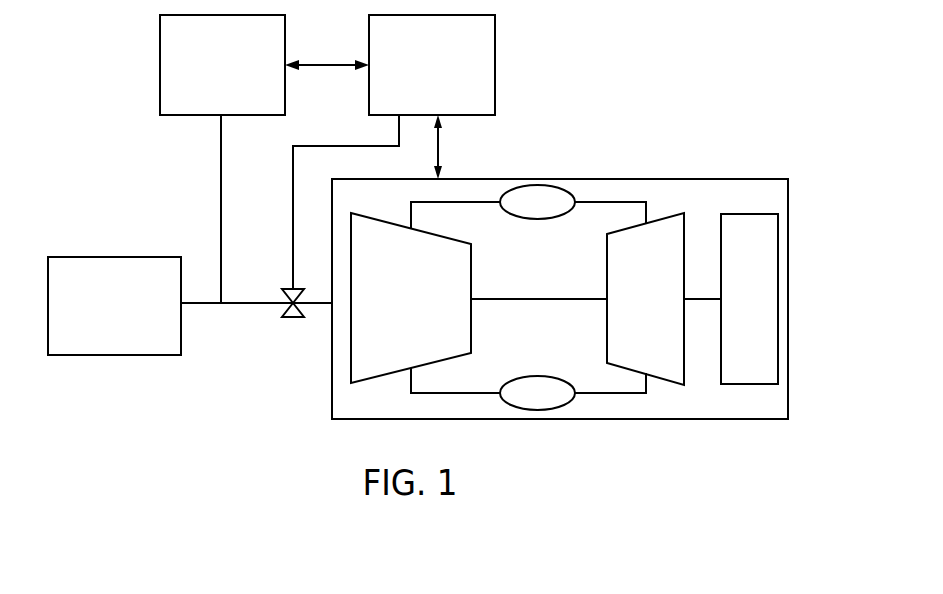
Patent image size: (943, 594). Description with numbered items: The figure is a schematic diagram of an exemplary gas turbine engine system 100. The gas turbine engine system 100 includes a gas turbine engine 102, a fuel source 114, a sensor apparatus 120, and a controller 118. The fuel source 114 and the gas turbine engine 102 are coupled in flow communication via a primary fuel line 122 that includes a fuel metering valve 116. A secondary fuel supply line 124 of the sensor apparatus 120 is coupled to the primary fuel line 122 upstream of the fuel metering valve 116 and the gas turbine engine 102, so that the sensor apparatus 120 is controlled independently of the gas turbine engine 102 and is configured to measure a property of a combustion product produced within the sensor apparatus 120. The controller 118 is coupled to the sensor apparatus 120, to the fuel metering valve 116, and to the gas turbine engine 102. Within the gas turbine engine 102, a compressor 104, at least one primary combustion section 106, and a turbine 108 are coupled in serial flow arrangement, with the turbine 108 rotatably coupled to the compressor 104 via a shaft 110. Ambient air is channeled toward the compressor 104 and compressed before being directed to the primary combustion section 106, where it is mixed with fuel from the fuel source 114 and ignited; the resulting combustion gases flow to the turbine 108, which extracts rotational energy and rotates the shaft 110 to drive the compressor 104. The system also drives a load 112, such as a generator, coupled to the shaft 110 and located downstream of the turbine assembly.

The gas turbine engine system 100 is at (642, 36).
The gas turbine engine 102 is at (645, 178).
The compressor 104 is at (422, 310).
The primary combustion section 106 is at (558, 213).
The turbine 108 is at (668, 311).
The shaft 110 is at (533, 296).
The load 112 is at (768, 311).
The fuel source 114 is at (95, 318).
The fuel metering valve 116 is at (290, 320).
The controller 118 is at (412, 77).
The sensor apparatus 120 is at (242, 77).
The primary fuel line 122 is at (237, 306).
The secondary fuel supply line 124 is at (221, 163).